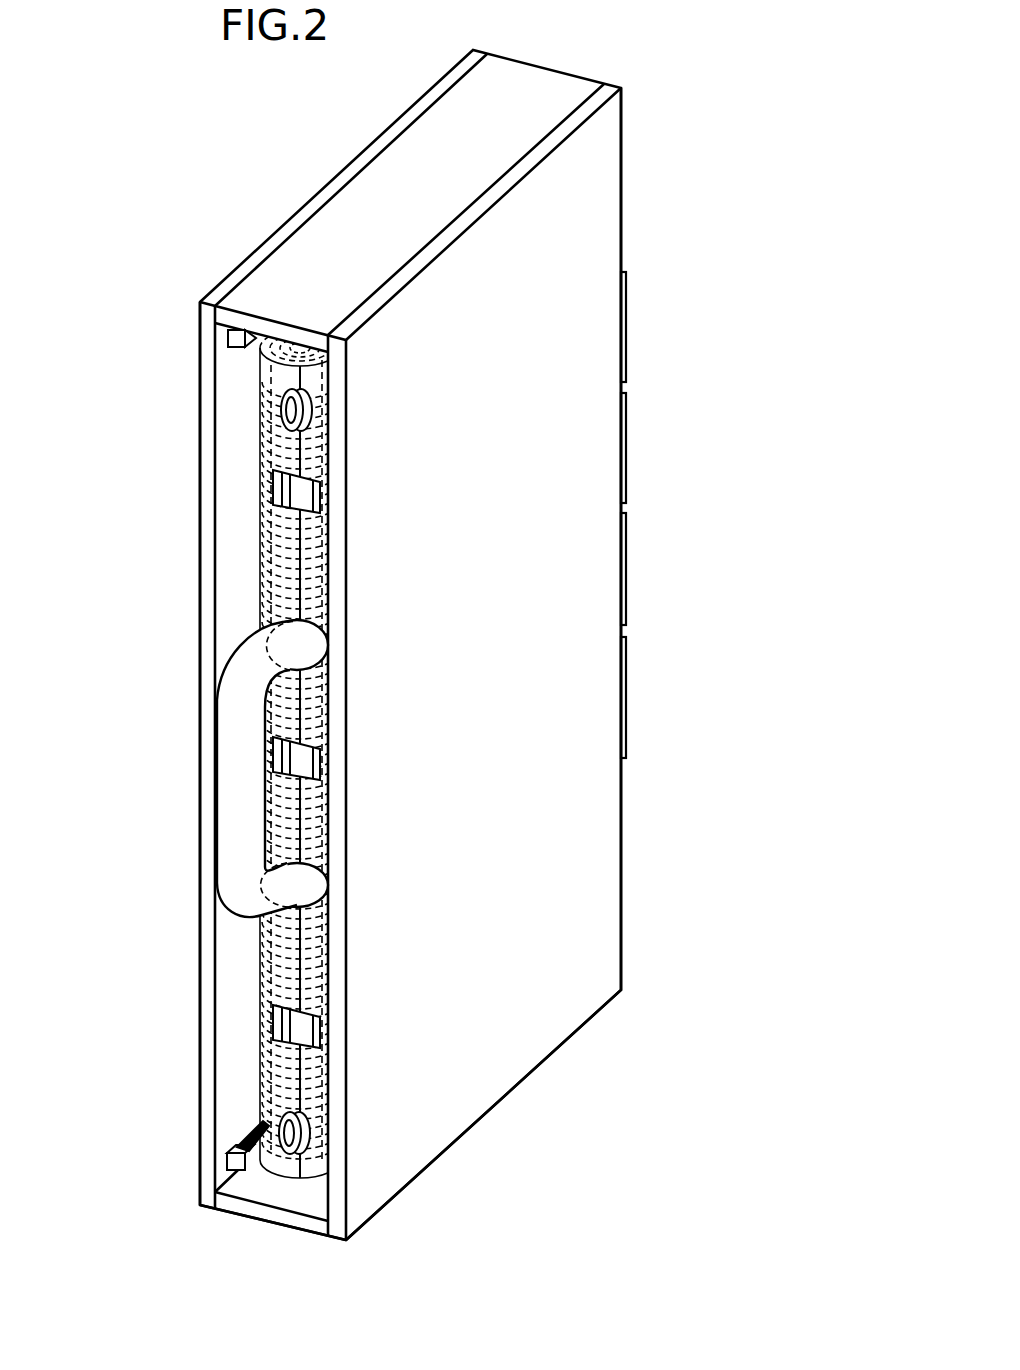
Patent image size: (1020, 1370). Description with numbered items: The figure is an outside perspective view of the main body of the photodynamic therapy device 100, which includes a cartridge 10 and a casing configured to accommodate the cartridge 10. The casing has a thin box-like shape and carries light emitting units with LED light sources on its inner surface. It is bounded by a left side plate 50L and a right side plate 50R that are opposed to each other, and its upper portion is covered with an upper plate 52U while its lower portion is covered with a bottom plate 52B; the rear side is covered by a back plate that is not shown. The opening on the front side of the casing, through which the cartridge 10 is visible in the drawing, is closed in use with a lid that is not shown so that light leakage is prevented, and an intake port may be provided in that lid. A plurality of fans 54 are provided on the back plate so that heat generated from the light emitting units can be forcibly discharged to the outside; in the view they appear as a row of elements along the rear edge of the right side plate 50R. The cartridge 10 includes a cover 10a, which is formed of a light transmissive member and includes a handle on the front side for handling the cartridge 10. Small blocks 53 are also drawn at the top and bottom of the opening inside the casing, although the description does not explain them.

The photodynamic therapy device 100 is at (222, 243).
The cartridge 10 is at (240, 525).
The cover 10a is at (282, 982).
The left side plate 50L is at (200, 377).
The right side plate 50R is at (578, 610).
The upper plate 52U is at (535, 83).
The bottom plate 52B is at (282, 1192).
The support block 53 is at (228, 338).
The fans 54 is at (626, 325).